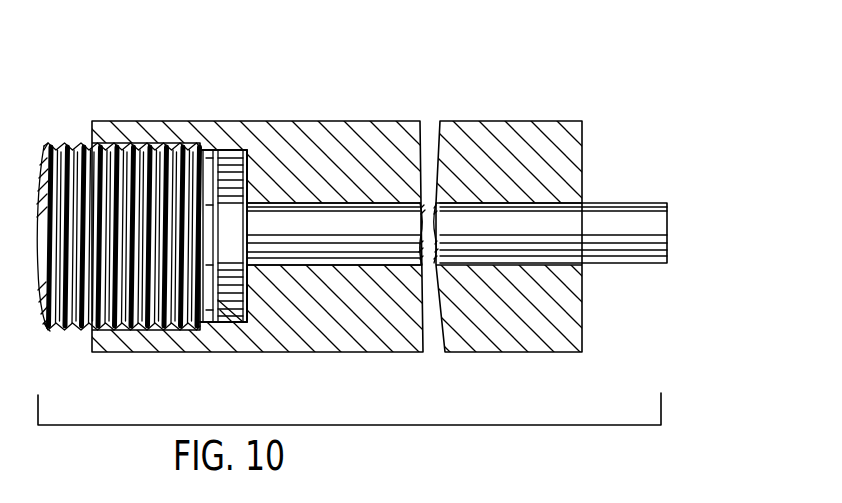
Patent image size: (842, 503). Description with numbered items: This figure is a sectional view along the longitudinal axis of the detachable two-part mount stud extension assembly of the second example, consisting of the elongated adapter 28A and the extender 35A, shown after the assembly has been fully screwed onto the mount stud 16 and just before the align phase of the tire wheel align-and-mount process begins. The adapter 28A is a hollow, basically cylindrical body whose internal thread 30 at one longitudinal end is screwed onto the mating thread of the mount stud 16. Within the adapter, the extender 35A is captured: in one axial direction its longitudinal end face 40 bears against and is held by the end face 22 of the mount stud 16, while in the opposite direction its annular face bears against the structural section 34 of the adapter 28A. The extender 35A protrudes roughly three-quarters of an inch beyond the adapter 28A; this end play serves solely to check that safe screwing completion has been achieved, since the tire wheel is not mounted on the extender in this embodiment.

The mount stud 16 is at (115, 145).
The elongated adapter 28A is at (357, 128).
The internal thread 30 is at (147, 332).
The structural section 34 is at (232, 148).
The end face 22 is at (211, 333).
The longitudinal end face 40 is at (250, 324).
The extender 35A is at (667, 235).